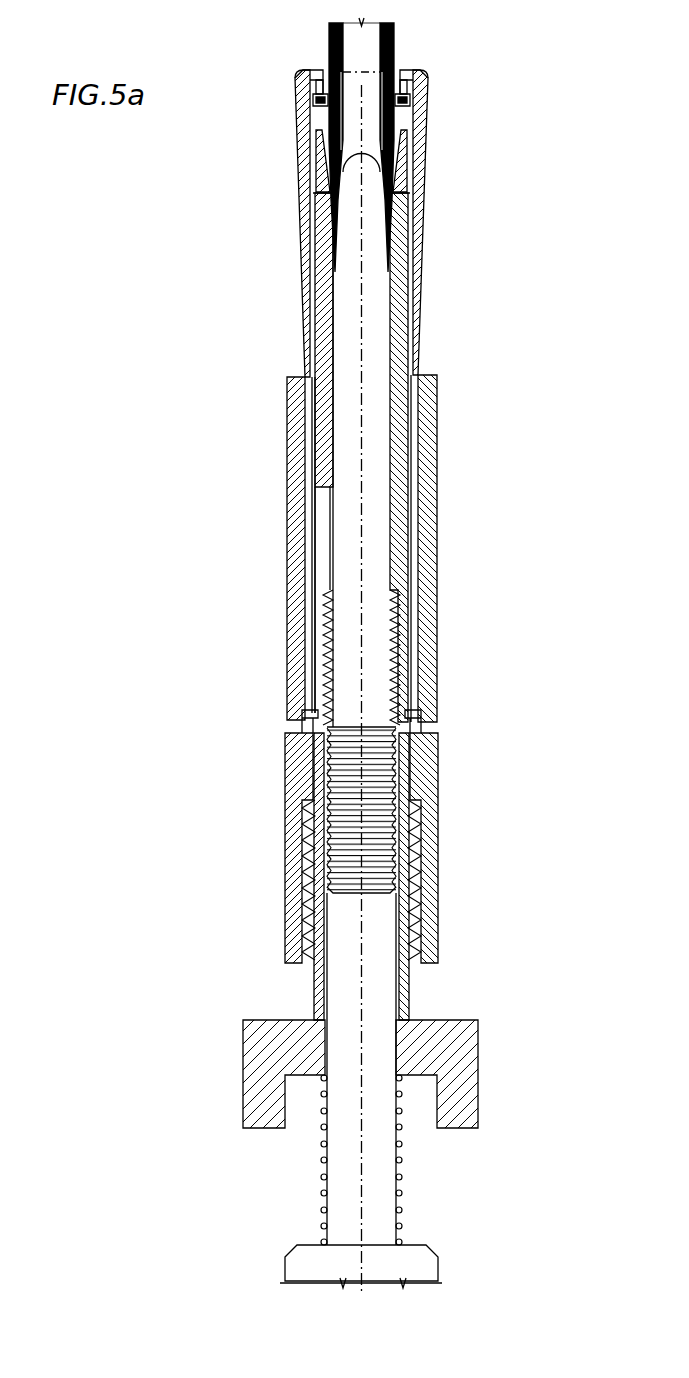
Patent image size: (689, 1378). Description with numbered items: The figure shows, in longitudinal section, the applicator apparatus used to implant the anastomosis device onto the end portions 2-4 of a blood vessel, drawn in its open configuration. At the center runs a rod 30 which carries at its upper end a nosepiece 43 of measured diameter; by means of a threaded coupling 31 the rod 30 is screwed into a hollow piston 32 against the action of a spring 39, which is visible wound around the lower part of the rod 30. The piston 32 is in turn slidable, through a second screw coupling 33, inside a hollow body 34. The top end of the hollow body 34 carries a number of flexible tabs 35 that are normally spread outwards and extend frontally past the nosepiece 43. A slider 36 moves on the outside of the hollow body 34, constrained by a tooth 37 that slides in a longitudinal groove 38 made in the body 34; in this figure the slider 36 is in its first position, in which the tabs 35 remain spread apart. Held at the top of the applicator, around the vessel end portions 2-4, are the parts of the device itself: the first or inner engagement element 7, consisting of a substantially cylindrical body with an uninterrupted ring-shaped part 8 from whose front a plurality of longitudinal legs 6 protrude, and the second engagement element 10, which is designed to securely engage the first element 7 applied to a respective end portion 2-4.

The end portions 2-4 is at (328, 37).
The longitudinal legs 6 is at (326, 123).
The first or inner engagement element 7 is at (305, 100).
The ring-shaped part 8 is at (318, 96).
The second engagement element 10 is at (316, 150).
The rod 30 is at (372, 327).
The threaded coupling 31 is at (378, 765).
The hollow piston 32 is at (415, 492).
The second screw coupling 33 is at (298, 918).
The hollow body 34 is at (283, 760).
The flexible tabs 35 is at (413, 82).
The slider 36 is at (293, 415).
The tooth 37 is at (315, 703).
The longitudinal groove 38 is at (313, 527).
The spring 39 is at (323, 1175).
The nosepiece 43 is at (372, 193).